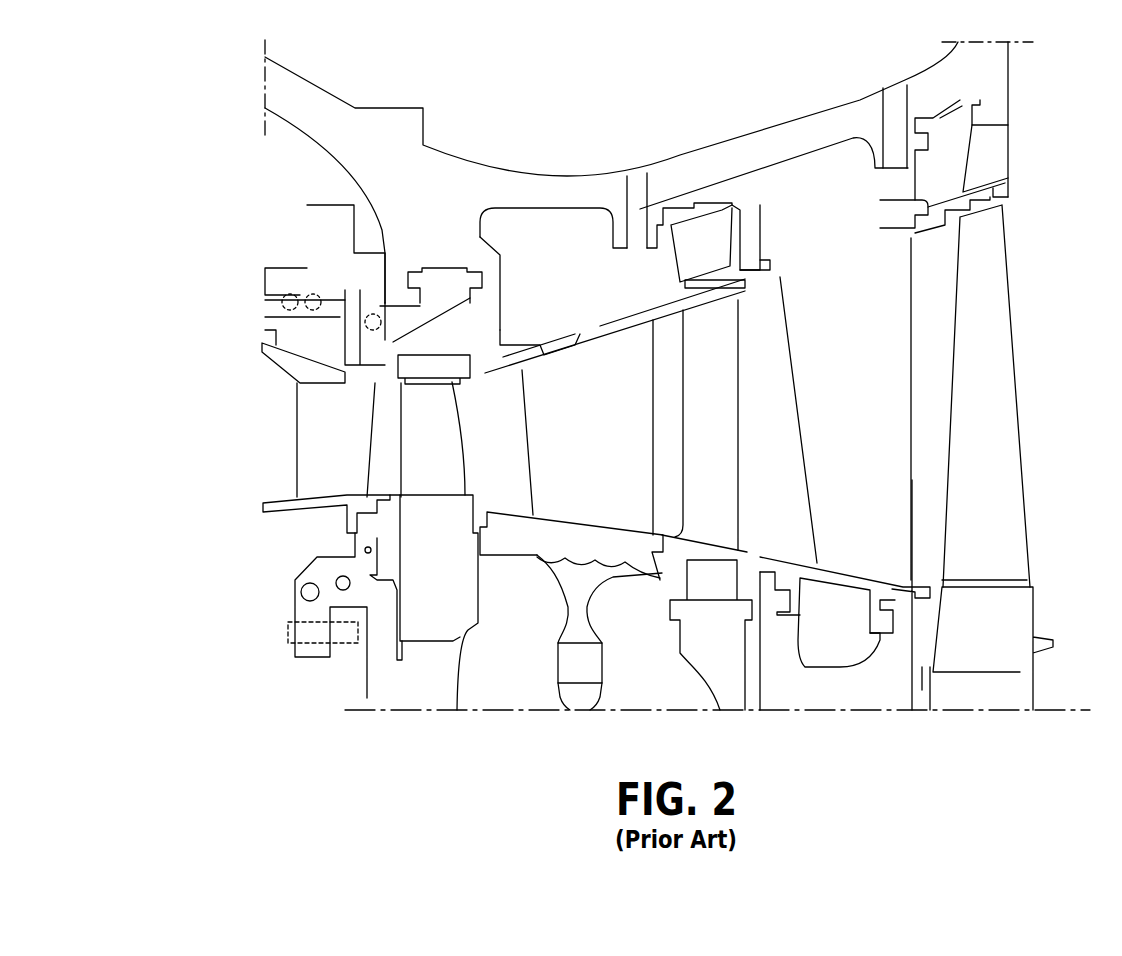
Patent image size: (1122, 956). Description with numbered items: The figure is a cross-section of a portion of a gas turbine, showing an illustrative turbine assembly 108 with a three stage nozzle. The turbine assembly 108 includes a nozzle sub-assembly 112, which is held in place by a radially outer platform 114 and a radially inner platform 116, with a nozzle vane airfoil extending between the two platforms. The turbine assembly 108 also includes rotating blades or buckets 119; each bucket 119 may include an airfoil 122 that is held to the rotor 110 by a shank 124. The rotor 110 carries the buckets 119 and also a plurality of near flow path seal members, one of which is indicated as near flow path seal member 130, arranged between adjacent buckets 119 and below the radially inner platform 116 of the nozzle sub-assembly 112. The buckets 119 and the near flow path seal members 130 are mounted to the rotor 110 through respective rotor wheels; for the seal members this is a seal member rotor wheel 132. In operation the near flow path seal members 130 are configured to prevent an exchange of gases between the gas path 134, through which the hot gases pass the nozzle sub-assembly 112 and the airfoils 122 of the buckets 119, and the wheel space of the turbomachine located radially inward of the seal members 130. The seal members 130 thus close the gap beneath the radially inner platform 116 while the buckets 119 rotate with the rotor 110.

The turbine assembly 108 is at (566, 162).
The rotor 110 is at (433, 682).
The nozzle sub-assembly 112 is at (560, 427).
The radially outer platform 114 is at (569, 362).
The radially inner platform 116 is at (632, 527).
The bucket 119 is at (398, 442).
The airfoil 122 is at (420, 421).
The shank 124 is at (435, 552).
The near flow path seal member 130 is at (585, 633).
The seal member rotor wheel 132 is at (580, 693).
The gas path 134 is at (261, 492).